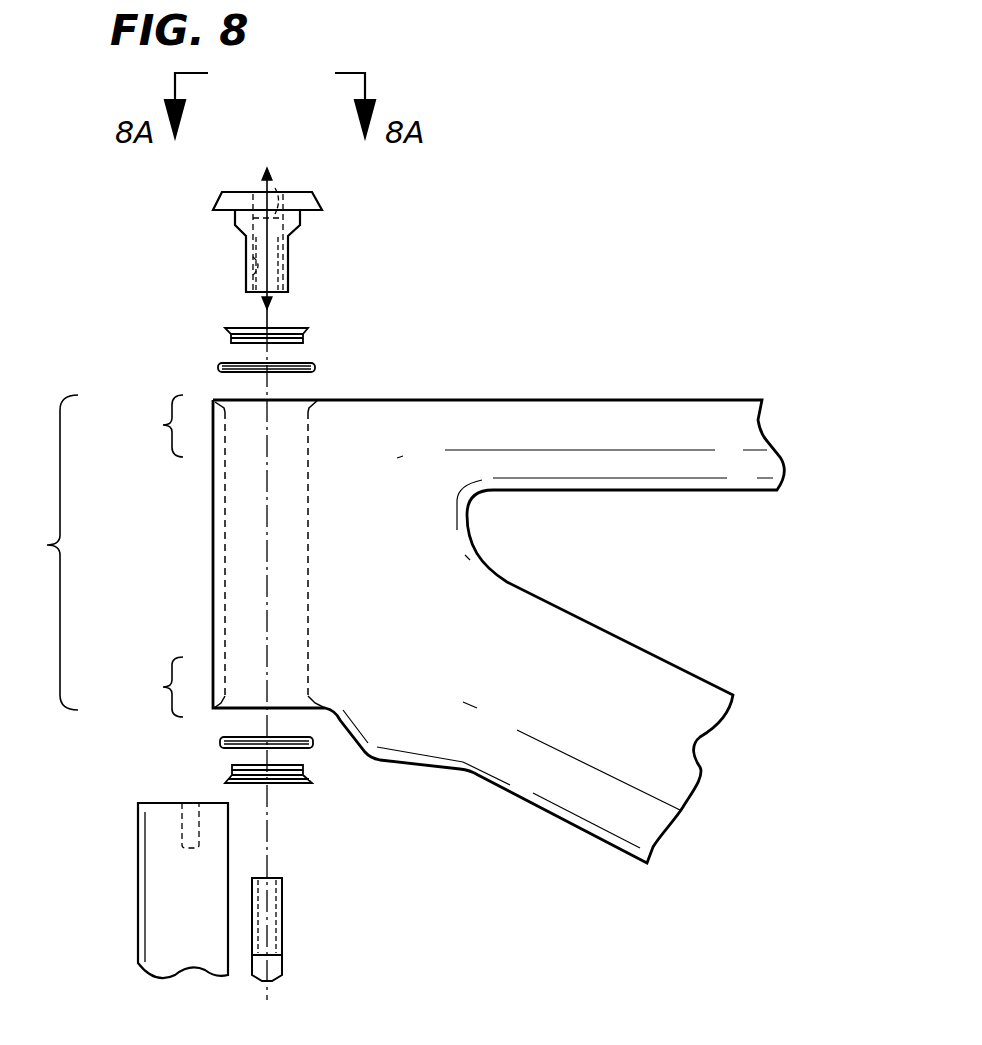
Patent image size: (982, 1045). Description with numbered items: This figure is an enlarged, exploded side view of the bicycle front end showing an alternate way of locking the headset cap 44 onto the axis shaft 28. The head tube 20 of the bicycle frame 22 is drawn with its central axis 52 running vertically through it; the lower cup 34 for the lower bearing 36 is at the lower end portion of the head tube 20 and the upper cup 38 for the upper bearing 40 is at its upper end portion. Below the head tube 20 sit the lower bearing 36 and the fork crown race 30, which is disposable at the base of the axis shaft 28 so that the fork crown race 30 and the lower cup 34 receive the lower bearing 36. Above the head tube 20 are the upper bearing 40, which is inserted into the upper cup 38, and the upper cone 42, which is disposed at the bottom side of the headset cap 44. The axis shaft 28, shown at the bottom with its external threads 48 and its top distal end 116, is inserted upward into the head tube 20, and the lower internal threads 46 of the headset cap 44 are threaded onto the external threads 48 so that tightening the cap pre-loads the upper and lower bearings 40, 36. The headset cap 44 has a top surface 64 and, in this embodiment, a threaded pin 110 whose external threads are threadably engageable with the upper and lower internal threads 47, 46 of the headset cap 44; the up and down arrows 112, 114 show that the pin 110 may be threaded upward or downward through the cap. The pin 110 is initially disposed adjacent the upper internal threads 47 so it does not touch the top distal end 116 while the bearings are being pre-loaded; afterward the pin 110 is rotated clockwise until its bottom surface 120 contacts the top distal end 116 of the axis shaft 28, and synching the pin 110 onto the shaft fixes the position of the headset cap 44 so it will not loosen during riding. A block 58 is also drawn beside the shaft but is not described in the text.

The head tube 20 is at (41, 552).
The bicycle frame 22 is at (690, 399).
The axis shaft 28 is at (313, 896).
The fork crown race 30 is at (232, 770).
The lower cup 34 is at (154, 687).
The lower bearing 36 is at (220, 743).
The upper cup 38 is at (154, 426).
The upper bearing 40 is at (220, 367).
The upper cone 42 is at (217, 330).
The headset cap 44 is at (294, 225).
The lower internal threads 46 is at (247, 258).
The upper internal threads 47 is at (277, 188).
The external threads 48 is at (285, 910).
The central axis 52 is at (267, 537).
The mounting block 58 is at (155, 805).
The top surface 64 is at (232, 187).
The threaded pin 110 is at (292, 242).
The up arrow 112 is at (259, 174).
The down arrow 114 is at (257, 302).
The top distal end 116 is at (272, 878).
The bottom surface 120 is at (290, 273).